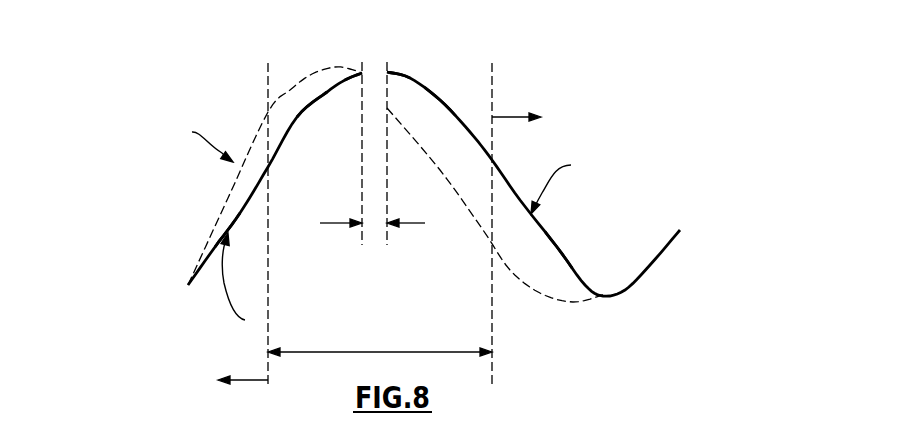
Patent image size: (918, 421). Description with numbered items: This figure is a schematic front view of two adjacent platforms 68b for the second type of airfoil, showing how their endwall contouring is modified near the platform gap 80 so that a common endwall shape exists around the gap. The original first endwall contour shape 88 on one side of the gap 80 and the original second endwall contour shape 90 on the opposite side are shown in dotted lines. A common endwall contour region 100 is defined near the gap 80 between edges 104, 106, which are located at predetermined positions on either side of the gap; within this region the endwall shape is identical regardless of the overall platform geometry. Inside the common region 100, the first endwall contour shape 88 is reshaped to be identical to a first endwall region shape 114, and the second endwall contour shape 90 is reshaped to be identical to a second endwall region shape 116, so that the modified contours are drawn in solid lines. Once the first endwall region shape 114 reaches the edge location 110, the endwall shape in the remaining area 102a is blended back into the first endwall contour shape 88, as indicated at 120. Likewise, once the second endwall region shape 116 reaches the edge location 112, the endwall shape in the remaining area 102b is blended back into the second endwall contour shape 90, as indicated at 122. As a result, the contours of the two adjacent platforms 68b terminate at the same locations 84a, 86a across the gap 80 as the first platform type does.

The platform 68b is at (192, 199).
The gap 80 is at (372, 186).
The termination location 84a is at (361, 72).
The termination location 86a is at (388, 72).
The first endwall contour shape 88 is at (253, 136).
The second endwall contour shape 90 is at (438, 168).
The common endwall contour region 100 is at (380, 352).
The remaining area 102a is at (248, 381).
The remaining area 102b is at (505, 119).
The edge of common region 104 is at (268, 82).
The edge of common region 106 is at (492, 104).
The edge location 110 is at (268, 170).
The edge location 112 is at (489, 157).
The first endwall region shape 114 is at (309, 108).
The second endwall region shape 116 is at (446, 104).
The blend 120 is at (240, 215).
The blend 122 is at (557, 247).